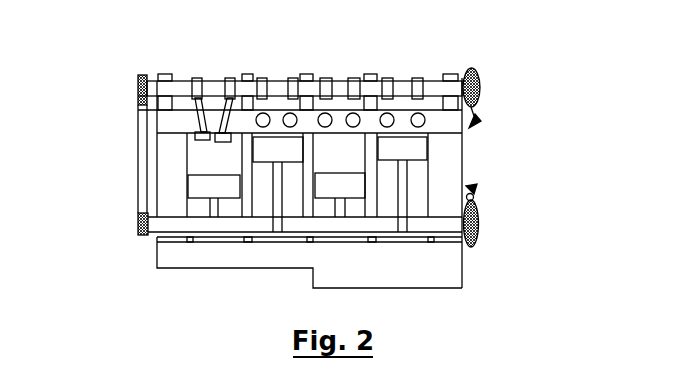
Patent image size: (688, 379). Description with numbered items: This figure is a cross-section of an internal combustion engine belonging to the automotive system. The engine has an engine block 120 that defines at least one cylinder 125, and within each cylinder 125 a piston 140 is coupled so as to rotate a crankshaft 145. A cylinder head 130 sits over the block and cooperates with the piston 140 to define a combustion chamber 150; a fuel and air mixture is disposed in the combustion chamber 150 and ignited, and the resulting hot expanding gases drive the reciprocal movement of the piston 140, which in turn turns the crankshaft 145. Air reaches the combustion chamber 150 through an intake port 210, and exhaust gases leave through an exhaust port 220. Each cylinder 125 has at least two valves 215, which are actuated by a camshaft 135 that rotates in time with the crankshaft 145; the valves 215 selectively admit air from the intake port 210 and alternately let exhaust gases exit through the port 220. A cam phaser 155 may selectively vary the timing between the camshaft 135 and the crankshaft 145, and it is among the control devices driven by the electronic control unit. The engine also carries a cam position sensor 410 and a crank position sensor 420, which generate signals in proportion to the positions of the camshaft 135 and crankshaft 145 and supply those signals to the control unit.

The engine block 120 is at (157, 173).
The cylinder 125 is at (315, 160).
The cylinder head 130 is at (190, 133).
The camshaft 135 is at (211, 81).
The piston 140 is at (343, 185).
The crankshaft 145 is at (183, 228).
The combustion chamber 150 is at (403, 133).
The cam phaser 155 is at (138, 88).
The intake port 210 is at (316, 110).
The valves 215 is at (195, 132).
The exhaust port 220 is at (287, 112).
The cam position sensor 410 is at (477, 118).
The crank position sensor 420 is at (476, 191).